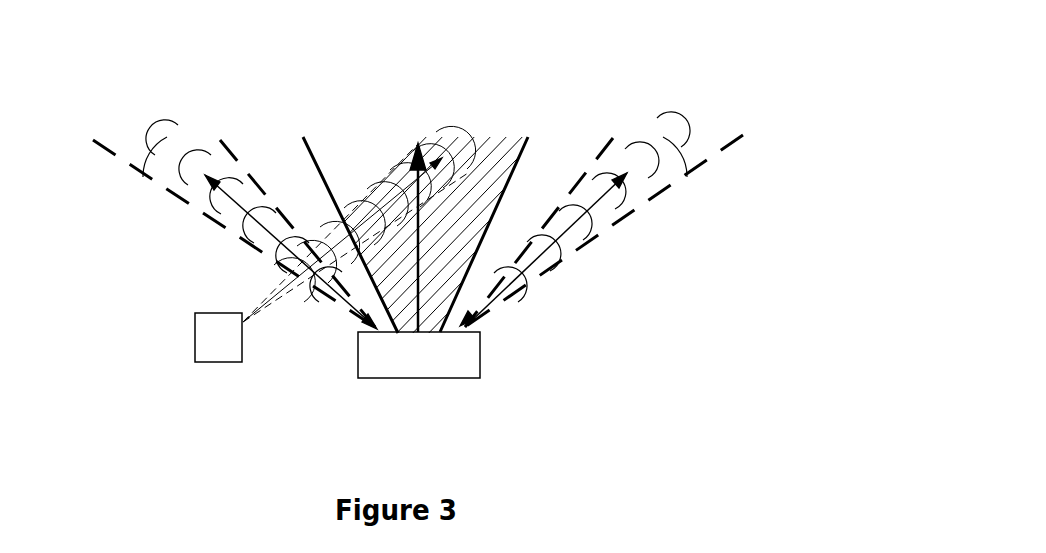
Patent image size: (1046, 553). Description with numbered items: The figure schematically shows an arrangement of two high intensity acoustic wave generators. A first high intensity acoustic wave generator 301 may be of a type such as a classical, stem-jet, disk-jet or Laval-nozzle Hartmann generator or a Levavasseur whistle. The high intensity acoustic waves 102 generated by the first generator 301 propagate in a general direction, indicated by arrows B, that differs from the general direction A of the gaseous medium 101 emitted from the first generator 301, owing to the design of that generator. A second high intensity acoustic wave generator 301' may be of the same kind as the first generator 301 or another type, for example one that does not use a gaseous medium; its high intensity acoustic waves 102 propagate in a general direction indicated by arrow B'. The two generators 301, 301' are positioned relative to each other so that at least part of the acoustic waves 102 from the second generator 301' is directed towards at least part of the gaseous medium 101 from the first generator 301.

The gaseous medium 101 is at (520, 160).
The high intensity acoustic waves 102 is at (590, 227).
The first high intensity acoustic wave generator 301 is at (494, 385).
The second high intensity acoustic wave generator 301' is at (145, 364).